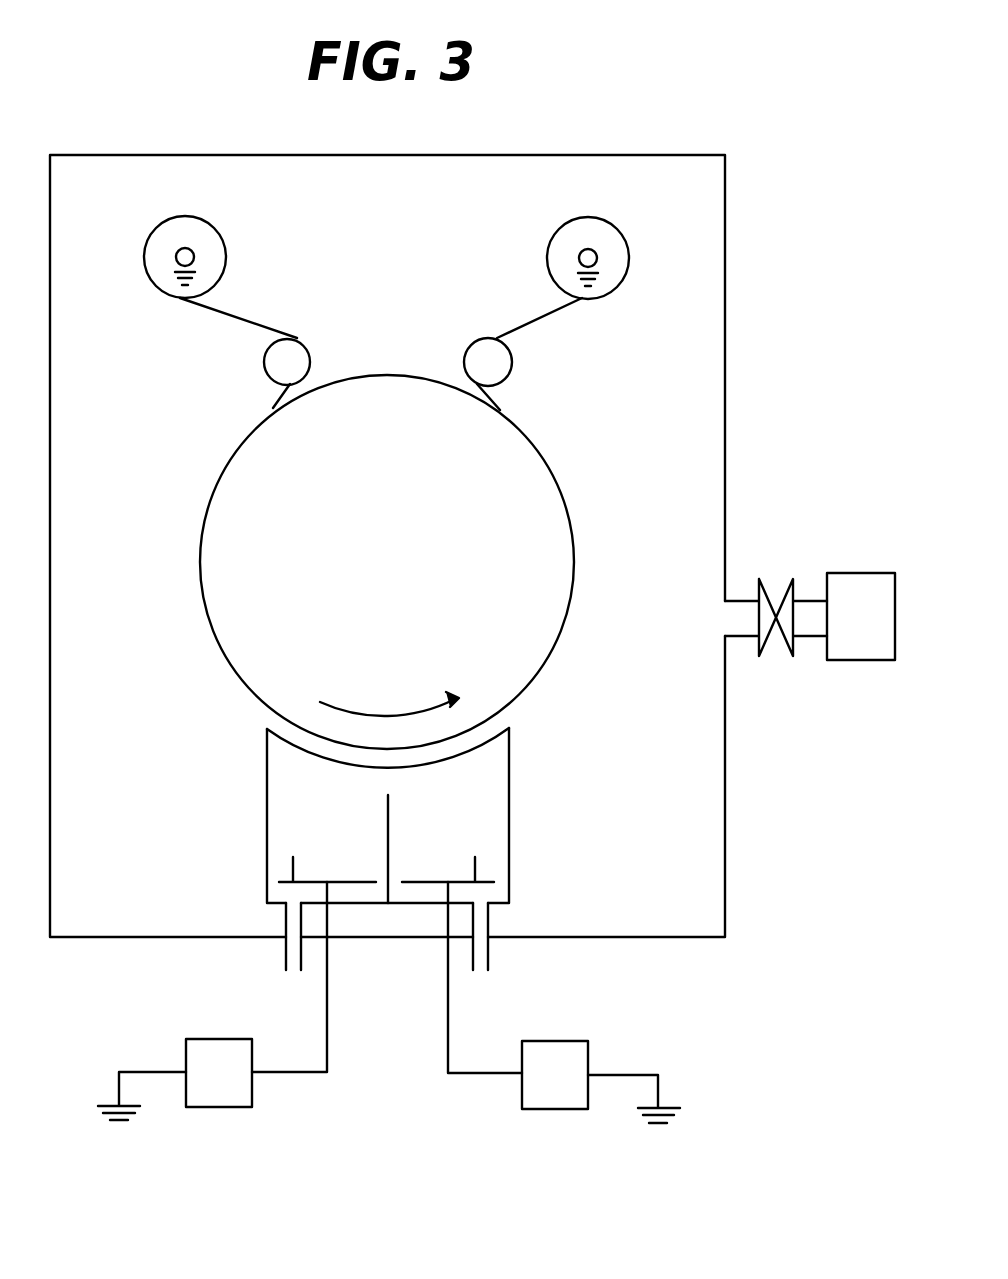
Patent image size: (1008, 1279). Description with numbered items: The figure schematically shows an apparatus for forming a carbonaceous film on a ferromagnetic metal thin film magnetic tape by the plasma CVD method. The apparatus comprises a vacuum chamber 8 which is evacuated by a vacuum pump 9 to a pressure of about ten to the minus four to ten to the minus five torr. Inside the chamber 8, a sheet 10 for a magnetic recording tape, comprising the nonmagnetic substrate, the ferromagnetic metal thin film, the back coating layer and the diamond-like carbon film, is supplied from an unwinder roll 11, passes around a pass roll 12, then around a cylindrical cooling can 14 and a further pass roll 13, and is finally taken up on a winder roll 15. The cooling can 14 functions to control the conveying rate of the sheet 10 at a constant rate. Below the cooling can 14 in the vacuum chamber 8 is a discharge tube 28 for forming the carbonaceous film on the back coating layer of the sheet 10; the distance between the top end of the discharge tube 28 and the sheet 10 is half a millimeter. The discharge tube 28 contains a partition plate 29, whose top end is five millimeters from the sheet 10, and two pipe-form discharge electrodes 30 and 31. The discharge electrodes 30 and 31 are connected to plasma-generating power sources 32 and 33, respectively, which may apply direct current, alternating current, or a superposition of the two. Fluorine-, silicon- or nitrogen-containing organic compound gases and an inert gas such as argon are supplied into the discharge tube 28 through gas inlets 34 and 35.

The vacuum chamber 8 is at (725, 835).
The vacuum pump 9 is at (810, 616).
The sheet 10 is at (267, 327).
The unwinder roll 11 is at (187, 255).
The pass roll 12 is at (287, 362).
The pass roll 13 is at (488, 362).
The cylindrical cooling can 14 is at (387, 562).
The winder roll 15 is at (585, 255).
The discharge tube 28 is at (267, 801).
The partition plate 29 is at (390, 835).
The pipe-form discharge electrode 30 is at (327, 851).
The pipe-form discharge electrode 31 is at (448, 851).
The plasma-generating power source 32 is at (212, 1001).
The plasma-generating power source 33 is at (564, 1002).
The gas inlet 34 is at (287, 962).
The gas inlet 35 is at (490, 962).